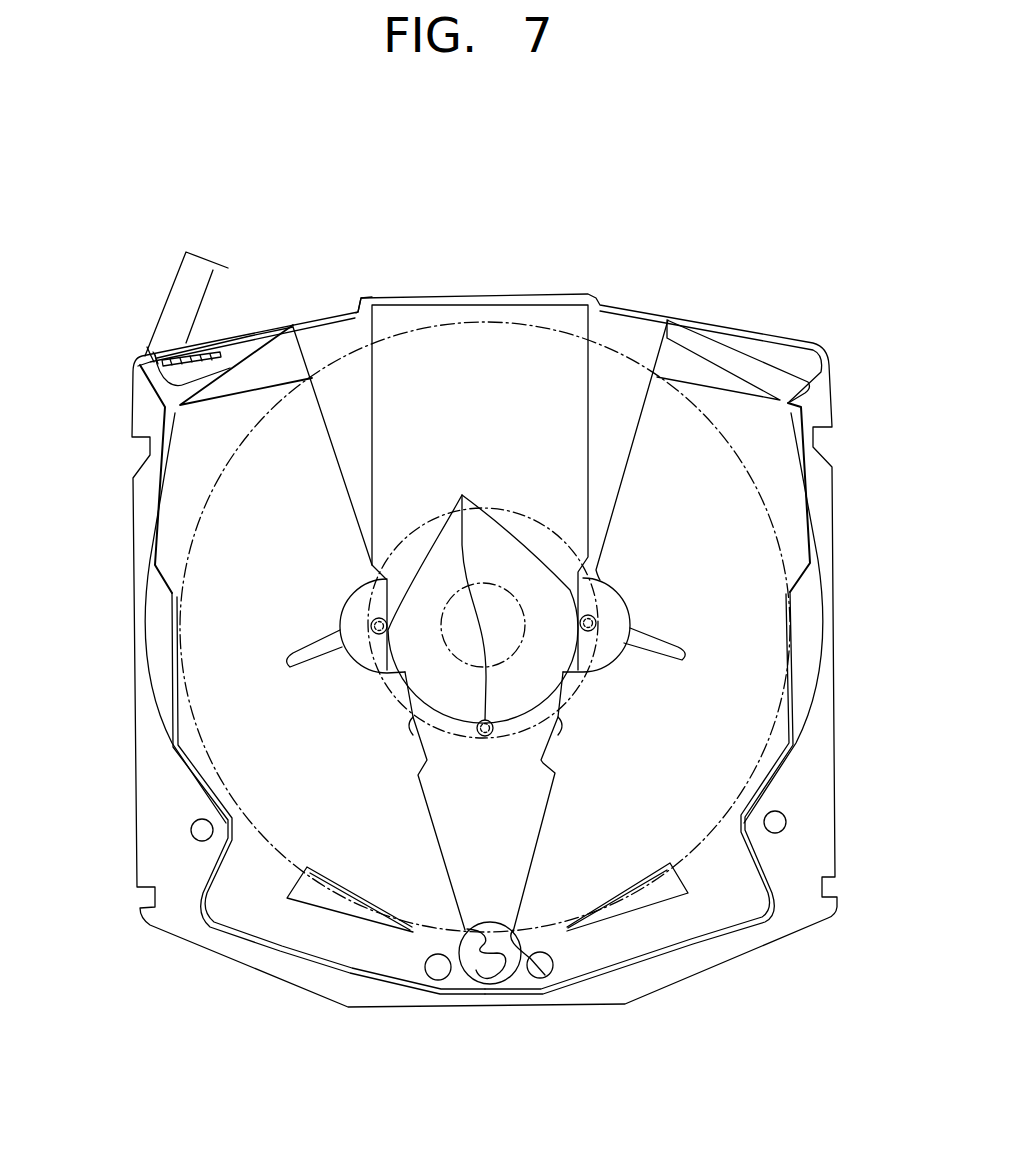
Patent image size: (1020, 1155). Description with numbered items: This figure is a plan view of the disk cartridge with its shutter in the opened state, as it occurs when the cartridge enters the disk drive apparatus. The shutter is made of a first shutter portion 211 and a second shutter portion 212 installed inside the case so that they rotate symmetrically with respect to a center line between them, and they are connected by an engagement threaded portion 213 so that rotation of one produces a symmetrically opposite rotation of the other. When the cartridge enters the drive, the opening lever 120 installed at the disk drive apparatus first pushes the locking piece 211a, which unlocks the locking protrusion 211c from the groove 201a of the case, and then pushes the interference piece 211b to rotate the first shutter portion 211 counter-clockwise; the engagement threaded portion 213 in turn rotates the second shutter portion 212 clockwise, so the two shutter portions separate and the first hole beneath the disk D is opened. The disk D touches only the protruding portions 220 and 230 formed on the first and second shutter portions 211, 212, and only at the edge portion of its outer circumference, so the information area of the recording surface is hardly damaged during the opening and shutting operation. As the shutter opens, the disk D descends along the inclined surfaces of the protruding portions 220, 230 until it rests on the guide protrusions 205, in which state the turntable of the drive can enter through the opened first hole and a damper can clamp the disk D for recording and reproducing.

The opening lever 120 is at (183, 302).
The groove 201a is at (363, 297).
The guide protrusions 205 is at (462, 497).
The first shutter portion 211 is at (177, 497).
The locking piece 211a is at (150, 367).
The interference piece 211b is at (147, 345).
The locking protrusion 211c is at (200, 353).
The second shutter portion 212 is at (787, 523).
The engagement threaded portion 213 is at (493, 985).
The protruding portion 220 is at (263, 372).
The protruding portion 230 is at (320, 895).
The disk D is at (203, 745).